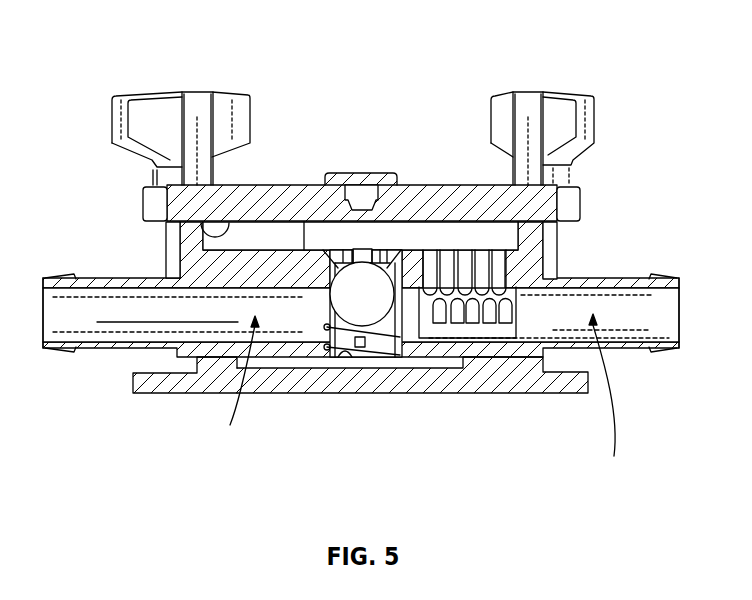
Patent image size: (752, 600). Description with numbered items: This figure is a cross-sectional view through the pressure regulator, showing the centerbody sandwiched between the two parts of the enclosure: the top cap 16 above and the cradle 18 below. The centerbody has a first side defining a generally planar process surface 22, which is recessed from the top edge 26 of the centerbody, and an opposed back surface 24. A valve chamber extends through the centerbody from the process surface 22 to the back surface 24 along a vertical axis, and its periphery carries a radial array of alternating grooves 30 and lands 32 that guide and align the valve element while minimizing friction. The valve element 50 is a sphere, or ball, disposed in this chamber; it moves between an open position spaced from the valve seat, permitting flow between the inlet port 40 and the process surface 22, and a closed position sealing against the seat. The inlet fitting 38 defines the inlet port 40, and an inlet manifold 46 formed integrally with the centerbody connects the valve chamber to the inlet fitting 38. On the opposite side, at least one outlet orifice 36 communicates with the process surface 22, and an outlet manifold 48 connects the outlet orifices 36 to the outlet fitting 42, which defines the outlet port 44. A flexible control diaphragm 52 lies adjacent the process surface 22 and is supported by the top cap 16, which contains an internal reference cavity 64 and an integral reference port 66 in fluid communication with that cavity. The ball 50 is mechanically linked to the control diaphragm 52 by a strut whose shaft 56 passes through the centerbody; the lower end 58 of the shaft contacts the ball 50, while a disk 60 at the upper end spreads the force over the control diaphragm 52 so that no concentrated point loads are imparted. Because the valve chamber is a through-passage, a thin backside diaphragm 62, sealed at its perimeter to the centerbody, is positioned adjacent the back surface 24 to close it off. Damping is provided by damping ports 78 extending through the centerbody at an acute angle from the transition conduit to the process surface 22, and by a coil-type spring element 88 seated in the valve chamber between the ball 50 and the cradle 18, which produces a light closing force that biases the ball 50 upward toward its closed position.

The top cap 16 is at (253, 193).
The cradle 18 is at (160, 383).
The process surface 22 is at (460, 240).
The back surface 24 is at (535, 362).
The top edge 26 is at (520, 240).
The grooves 30 is at (388, 345).
The lands 32 is at (393, 347).
The outlet orifice 36 is at (503, 273).
The inlet fitting 38 is at (115, 280).
The inlet port 40 is at (43, 328).
The outlet fitting 42 is at (579, 348).
The outlet port 44 is at (679, 320).
The inlet manifold 46 is at (239, 388).
The outlet manifold 48 is at (608, 399).
The valve element 50 is at (345, 297).
The control diaphragm 52 is at (215, 230).
The shaft 56 is at (360, 265).
The lower end 58 is at (385, 240).
The disk 60 is at (346, 222).
The backside diaphragm 62 is at (461, 357).
The reference cavity 64 is at (237, 215).
The reference port 66 is at (356, 182).
The damping port 78 is at (342, 262).
The spring element 88 is at (368, 333).